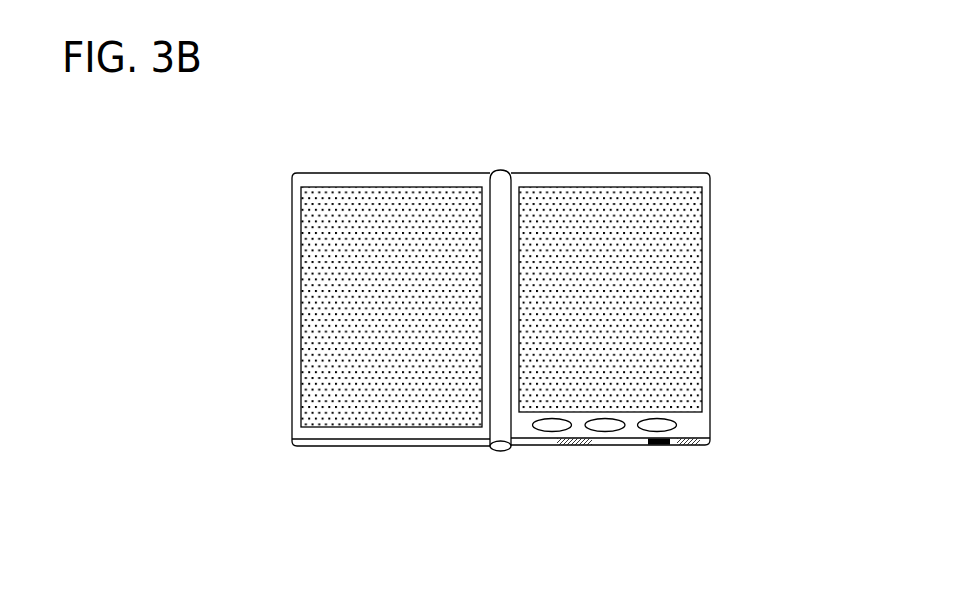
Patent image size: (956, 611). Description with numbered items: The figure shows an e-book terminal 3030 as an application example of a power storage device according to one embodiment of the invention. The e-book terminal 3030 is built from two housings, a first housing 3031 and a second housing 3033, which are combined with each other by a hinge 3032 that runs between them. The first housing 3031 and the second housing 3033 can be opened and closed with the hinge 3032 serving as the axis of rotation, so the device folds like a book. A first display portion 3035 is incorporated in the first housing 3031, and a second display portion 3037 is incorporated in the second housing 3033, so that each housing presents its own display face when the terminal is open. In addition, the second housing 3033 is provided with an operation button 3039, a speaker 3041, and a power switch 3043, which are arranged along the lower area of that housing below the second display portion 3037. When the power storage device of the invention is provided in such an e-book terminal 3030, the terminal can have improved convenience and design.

The e-book terminal 3030 is at (532, 162).
The first housing 3031 is at (297, 243).
The hinge 3032 is at (482, 446).
The second housing 3033 is at (707, 242).
The first display portion 3035 is at (337, 338).
The second display portion 3037 is at (676, 328).
The operation button 3039 is at (644, 429).
The speaker 3041 is at (560, 448).
The power switch 3043 is at (652, 448).